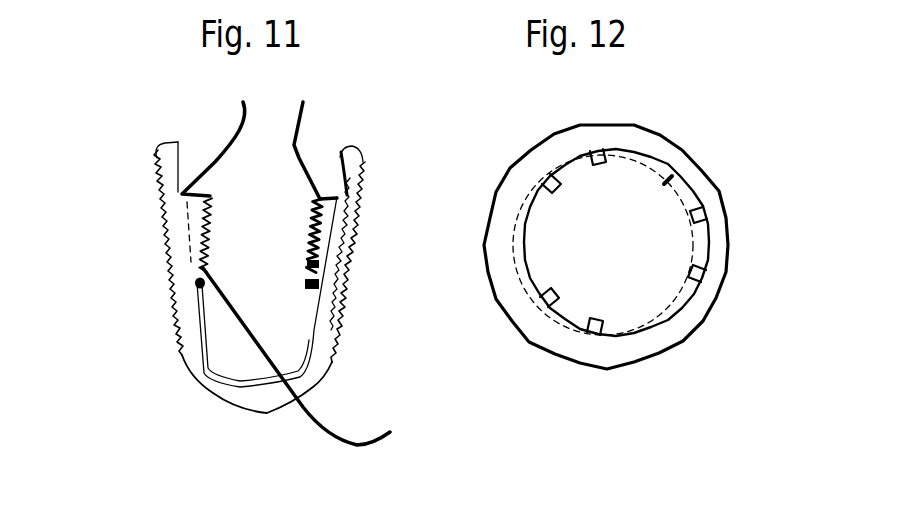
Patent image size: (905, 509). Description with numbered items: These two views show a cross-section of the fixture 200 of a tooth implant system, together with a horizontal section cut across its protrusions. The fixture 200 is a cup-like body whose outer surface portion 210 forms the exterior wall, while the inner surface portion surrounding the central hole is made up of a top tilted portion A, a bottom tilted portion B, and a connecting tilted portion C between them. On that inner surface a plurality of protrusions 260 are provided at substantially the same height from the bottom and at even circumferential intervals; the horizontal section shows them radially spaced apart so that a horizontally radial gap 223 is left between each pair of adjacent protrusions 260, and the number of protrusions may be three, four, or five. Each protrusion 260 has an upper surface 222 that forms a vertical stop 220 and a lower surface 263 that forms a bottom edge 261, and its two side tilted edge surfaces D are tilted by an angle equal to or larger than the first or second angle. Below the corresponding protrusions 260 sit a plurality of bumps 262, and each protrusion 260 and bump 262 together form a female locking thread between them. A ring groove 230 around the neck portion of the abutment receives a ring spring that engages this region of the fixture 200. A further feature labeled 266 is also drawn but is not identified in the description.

In FIG. 11, the fixture 200 is at (63, 82).
In FIG. 11, the outer surface portion 210 is at (180, 362).
In FIG. 12, the outer surface portion 210 is at (686, 247).
In FIG. 11, the vertical stop 220 is at (182, 194).
In FIG. 11, the upper surface 222 is at (218, 132).
In FIG. 12, the upper surface 222 is at (705, 290).
In FIG. 12, the horizontally radial gap 223 is at (705, 248).
In FIG. 11, the ring groove 230 is at (273, 131).
In FIG. 11, the protrusions 260 is at (251, 208).
In FIG. 12, the protrusions 260 is at (593, 224).
In FIG. 11, the bottom edge 261 is at (126, 289).
In FIG. 11, the bumps 262 is at (304, 371).
In FIG. 11, the lower surface 263 is at (319, 359).
In FIG. 11, the groove 266 is at (310, 243).
In FIG. 12, the groove 266 is at (675, 172).
In FIG. 11, the top tilted portion A is at (133, 183).
In FIG. 11, the bottom tilted portion B is at (147, 328).
In FIG. 12, the connecting tilted portion C is at (575, 358).
In FIG. 12, the side tilted edge surfaces D is at (624, 400).